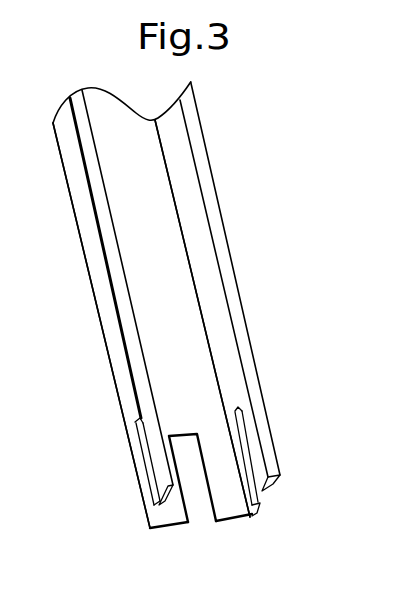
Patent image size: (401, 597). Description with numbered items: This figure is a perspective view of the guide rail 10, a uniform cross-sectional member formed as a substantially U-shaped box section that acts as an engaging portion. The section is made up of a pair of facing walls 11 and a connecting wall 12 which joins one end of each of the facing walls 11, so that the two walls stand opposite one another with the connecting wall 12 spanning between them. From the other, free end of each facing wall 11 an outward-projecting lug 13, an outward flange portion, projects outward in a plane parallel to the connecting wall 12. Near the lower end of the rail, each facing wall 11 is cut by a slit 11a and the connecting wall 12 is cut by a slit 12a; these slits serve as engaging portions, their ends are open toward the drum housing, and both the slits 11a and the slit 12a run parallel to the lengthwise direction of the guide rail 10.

The guide rail 10 is at (242, 119).
The facing walls 11 is at (90, 242).
The slits 11a is at (157, 509).
The connecting wall 12 is at (175, 305).
The slit 12a is at (197, 495).
The outward-projecting lugs 13 is at (245, 340).